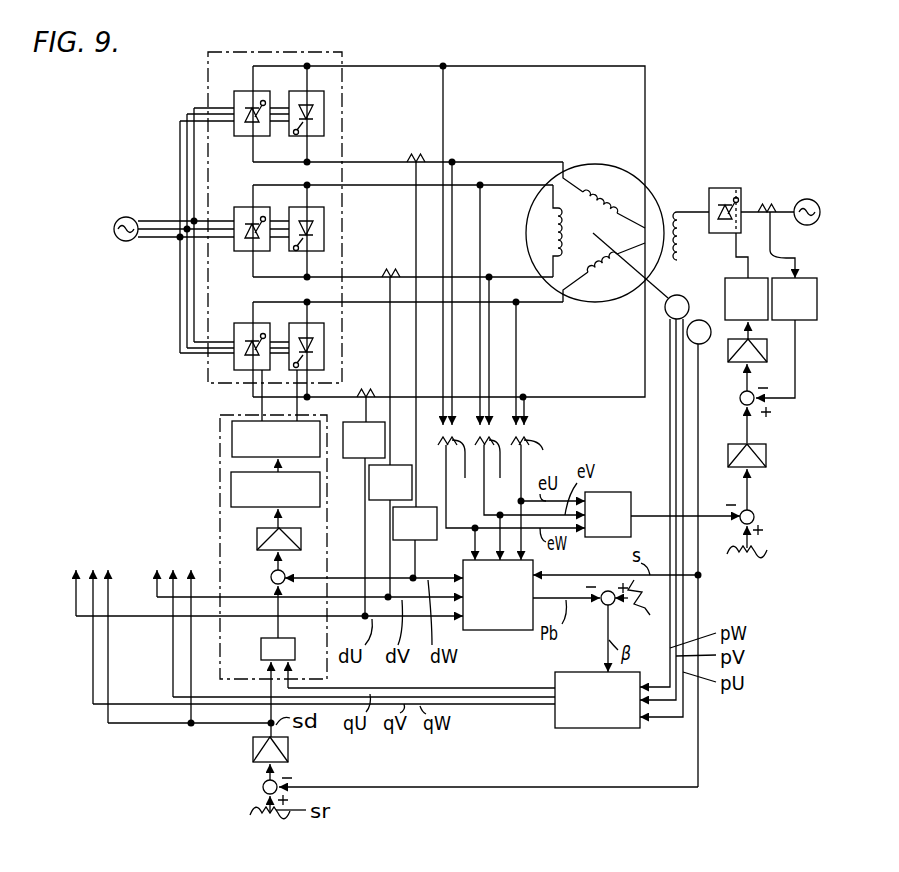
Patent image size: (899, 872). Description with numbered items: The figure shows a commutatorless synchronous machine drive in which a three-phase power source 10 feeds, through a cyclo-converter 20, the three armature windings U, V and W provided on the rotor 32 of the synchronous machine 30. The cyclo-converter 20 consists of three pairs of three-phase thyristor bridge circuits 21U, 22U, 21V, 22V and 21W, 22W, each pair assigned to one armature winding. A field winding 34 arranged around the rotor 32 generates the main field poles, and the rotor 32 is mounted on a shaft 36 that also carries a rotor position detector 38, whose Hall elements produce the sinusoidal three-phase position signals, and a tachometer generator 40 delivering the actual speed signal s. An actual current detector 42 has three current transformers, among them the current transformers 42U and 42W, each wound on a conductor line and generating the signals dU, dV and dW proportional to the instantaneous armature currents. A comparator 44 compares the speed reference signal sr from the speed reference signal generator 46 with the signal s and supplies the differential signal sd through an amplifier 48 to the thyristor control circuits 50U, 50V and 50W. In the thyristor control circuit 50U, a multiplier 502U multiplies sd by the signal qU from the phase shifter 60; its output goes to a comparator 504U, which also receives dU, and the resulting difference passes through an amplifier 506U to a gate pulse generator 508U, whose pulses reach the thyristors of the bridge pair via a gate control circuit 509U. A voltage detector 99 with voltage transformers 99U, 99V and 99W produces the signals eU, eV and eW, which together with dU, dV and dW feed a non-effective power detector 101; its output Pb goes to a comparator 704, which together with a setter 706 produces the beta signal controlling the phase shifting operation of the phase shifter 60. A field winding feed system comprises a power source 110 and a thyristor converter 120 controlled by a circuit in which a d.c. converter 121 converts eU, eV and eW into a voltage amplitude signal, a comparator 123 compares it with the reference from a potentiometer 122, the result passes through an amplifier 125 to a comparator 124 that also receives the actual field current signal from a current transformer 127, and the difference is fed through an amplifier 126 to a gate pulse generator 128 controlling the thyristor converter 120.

The three-phase power source 10 is at (120, 241).
The cyclo-converter 20 is at (287, 52).
The three-phase thyristor bridge circuit 21W is at (240, 137).
The three-phase thyristor bridge circuit 22W is at (293, 137).
The three-phase thyristor bridge circuit 21V is at (240, 252).
The three-phase thyristor bridge circuit 22V is at (300, 252).
The three-phase thyristor bridge circuit 21U is at (240, 323).
The three-phase thyristor bridge circuit 22U is at (293, 323).
The commutatorless synchronous machine 30 is at (615, 146).
The rotor 32 is at (590, 303).
The field winding 34 is at (684, 245).
The shaft 36 is at (658, 297).
The rotor position detector 38 is at (667, 318).
The tachometer generator 40 is at (707, 342).
The actual current detector 42 is at (440, 484).
The current transformer 42U is at (352, 422).
The current transformer 42W is at (437, 537).
The comparator 44 is at (263, 790).
The speed reference signal generator 46 is at (272, 822).
The amplifier 48 is at (288, 752).
The thyristor control circuit 50U is at (220, 440).
The thyristor control circuit 50V is at (195, 566).
The thyristor control circuit 50W is at (115, 564).
The phase shifter 60 is at (598, 728).
The voltage detector 99 is at (578, 437).
The voltage transformer 99W is at (511, 297).
The voltage transformer 99V is at (530, 350).
The voltage transformer 99U is at (548, 401).
The non-effective power detector 101 is at (515, 630).
The power source 110 is at (815, 200).
The thyristor converter 120 is at (725, 188).
The d.c. converter 121 is at (620, 492).
The potentiometer 122 is at (752, 556).
The comparator 123 is at (754, 514).
The comparator 124 is at (740, 405).
The amplifier 125 is at (766, 455).
The amplifier 126 is at (767, 350).
The current transformer 127 is at (817, 302).
The gate pulse generator 128 is at (786, 258).
The multiplier 502U is at (258, 650).
The comparator 504U is at (270, 583).
The amplifier 506U is at (257, 540).
The gate pulse generator 508U is at (231, 490).
The gate control circuit 509U is at (232, 456).
The comparator 704 is at (602, 606).
The power factor reference setter 706 is at (645, 614).